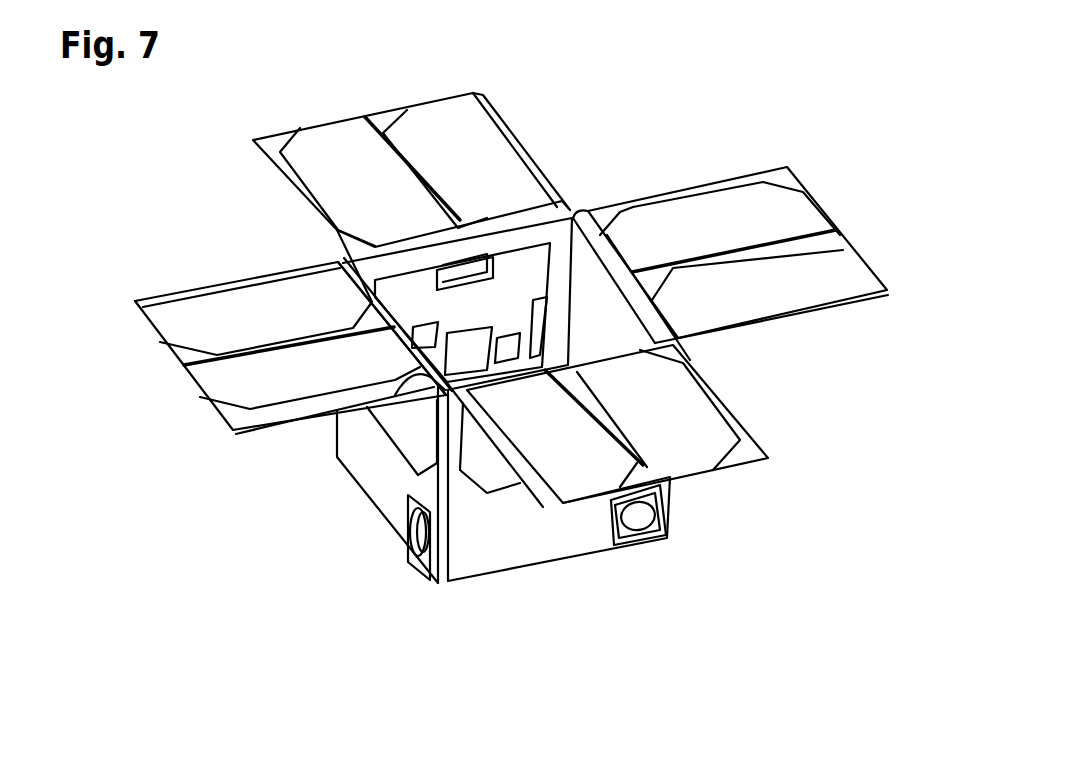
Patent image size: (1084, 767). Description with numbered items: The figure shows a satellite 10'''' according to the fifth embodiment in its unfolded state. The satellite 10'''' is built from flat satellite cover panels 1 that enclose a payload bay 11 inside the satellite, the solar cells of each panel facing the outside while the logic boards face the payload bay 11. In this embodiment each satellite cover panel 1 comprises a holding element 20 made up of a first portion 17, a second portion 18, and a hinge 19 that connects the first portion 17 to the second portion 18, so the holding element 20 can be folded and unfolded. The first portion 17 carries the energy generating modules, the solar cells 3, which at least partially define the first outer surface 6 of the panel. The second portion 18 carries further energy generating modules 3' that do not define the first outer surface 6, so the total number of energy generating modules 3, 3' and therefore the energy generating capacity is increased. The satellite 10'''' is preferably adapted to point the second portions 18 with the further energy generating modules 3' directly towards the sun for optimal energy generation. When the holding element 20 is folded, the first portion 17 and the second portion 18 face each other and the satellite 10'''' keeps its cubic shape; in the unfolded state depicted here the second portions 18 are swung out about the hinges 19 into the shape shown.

The satellite cover panel 1 is at (366, 543).
The solar cells 3 is at (417, 520).
The further energy generating modules 3' is at (523, 325).
The first outer surface 6 is at (387, 489).
The satellite 10'''' is at (133, 174).
The payload bay 11 is at (393, 297).
The first portion 17 is at (340, 458).
The second portion 18 is at (493, 102).
The hinge 19 is at (548, 225).
The holding element 20 is at (542, 130).